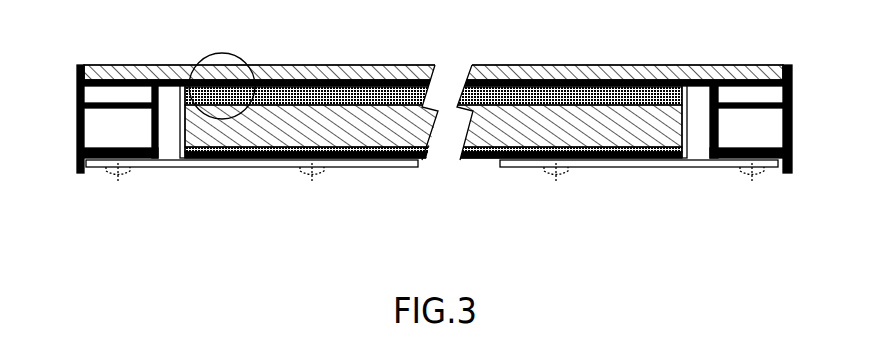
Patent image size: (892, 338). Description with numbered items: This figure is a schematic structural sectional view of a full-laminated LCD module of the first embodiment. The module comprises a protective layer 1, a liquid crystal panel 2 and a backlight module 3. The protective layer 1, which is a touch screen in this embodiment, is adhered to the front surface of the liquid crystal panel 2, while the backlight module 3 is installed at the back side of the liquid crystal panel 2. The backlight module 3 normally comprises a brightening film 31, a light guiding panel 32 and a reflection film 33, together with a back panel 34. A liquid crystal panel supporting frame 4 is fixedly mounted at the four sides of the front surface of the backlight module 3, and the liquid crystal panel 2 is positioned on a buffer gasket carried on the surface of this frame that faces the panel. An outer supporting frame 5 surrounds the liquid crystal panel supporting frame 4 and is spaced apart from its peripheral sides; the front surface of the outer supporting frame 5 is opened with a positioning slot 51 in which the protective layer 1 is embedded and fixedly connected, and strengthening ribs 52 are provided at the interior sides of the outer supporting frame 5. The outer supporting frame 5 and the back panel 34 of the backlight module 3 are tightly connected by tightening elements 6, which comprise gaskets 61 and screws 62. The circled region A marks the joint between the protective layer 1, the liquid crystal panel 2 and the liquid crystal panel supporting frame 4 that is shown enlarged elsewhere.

The protective layer 1 is at (145, 70).
The liquid crystal panel 2 is at (303, 78).
The backlight module 3 is at (242, 223).
The brightening film 31 is at (358, 107).
The light guiding panel 32 is at (372, 135).
The reflection film 33 is at (238, 160).
The back panel 34 is at (278, 163).
The liquid crystal panel supporting frame 4 is at (184, 86).
The outer supporting frame 5 is at (77, 135).
The positioning slot 51 is at (77, 85).
The strengthening ribs 52 is at (77, 110).
The tightening elements 6 is at (185, 218).
The gaskets 61 is at (157, 163).
The screws 62 is at (125, 175).
The detail region A is at (235, 54).